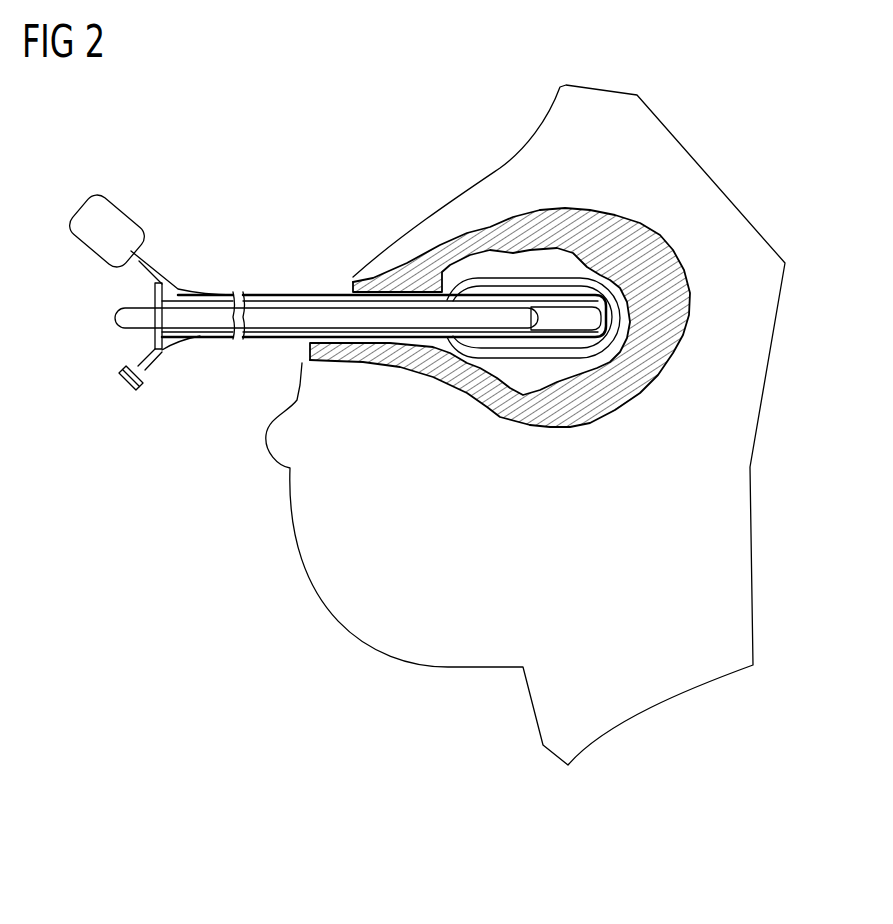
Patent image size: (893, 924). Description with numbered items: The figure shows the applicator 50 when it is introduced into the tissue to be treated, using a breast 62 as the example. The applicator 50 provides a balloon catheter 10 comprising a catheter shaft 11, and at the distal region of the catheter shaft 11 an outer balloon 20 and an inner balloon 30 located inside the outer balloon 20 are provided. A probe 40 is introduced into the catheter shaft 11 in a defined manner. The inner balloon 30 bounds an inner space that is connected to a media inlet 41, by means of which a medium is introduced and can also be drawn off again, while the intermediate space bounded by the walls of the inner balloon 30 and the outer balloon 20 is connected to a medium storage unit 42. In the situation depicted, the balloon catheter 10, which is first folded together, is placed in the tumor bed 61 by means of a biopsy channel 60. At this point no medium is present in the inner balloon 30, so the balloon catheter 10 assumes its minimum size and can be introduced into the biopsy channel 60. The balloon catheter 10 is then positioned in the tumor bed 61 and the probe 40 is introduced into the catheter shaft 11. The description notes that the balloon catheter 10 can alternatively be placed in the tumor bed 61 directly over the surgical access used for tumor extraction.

The balloon catheter 10 is at (513, 263).
The catheter shaft 11 is at (220, 333).
The outer balloon 20 is at (583, 278).
The inner balloon 30 is at (614, 252).
The probe 40 is at (117, 314).
The media inlet 41 is at (150, 363).
The medium storage unit 42 is at (81, 218).
The applicator 50 is at (237, 214).
The biopsy channel 60 is at (348, 283).
The tumor bed 61 is at (517, 380).
The breast 62 is at (320, 567).